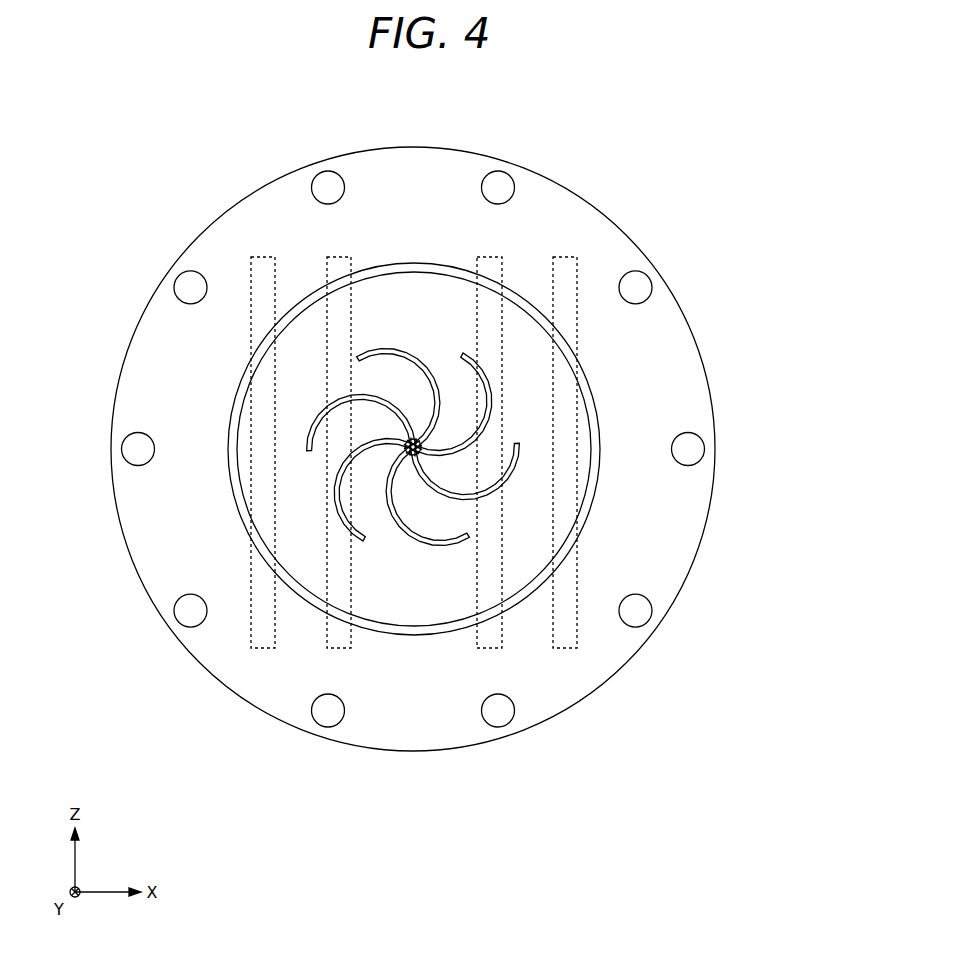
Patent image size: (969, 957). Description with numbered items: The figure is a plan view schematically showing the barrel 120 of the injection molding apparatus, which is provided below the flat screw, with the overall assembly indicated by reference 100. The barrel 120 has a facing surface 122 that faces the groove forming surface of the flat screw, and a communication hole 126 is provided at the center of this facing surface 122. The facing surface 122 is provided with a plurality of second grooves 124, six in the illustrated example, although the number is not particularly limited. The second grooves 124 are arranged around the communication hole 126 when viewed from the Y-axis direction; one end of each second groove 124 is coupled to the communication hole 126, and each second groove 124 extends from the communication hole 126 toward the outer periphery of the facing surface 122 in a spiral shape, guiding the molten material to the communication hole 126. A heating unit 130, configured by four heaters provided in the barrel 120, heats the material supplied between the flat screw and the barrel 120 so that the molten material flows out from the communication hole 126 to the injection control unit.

The heat exchange device 100 is at (727, 114).
The barrel 120 is at (666, 169).
The facing surface 122 is at (449, 606).
The second groove 124 is at (403, 356).
The communication hole 126 is at (393, 457).
The heating unit 130 is at (263, 277).